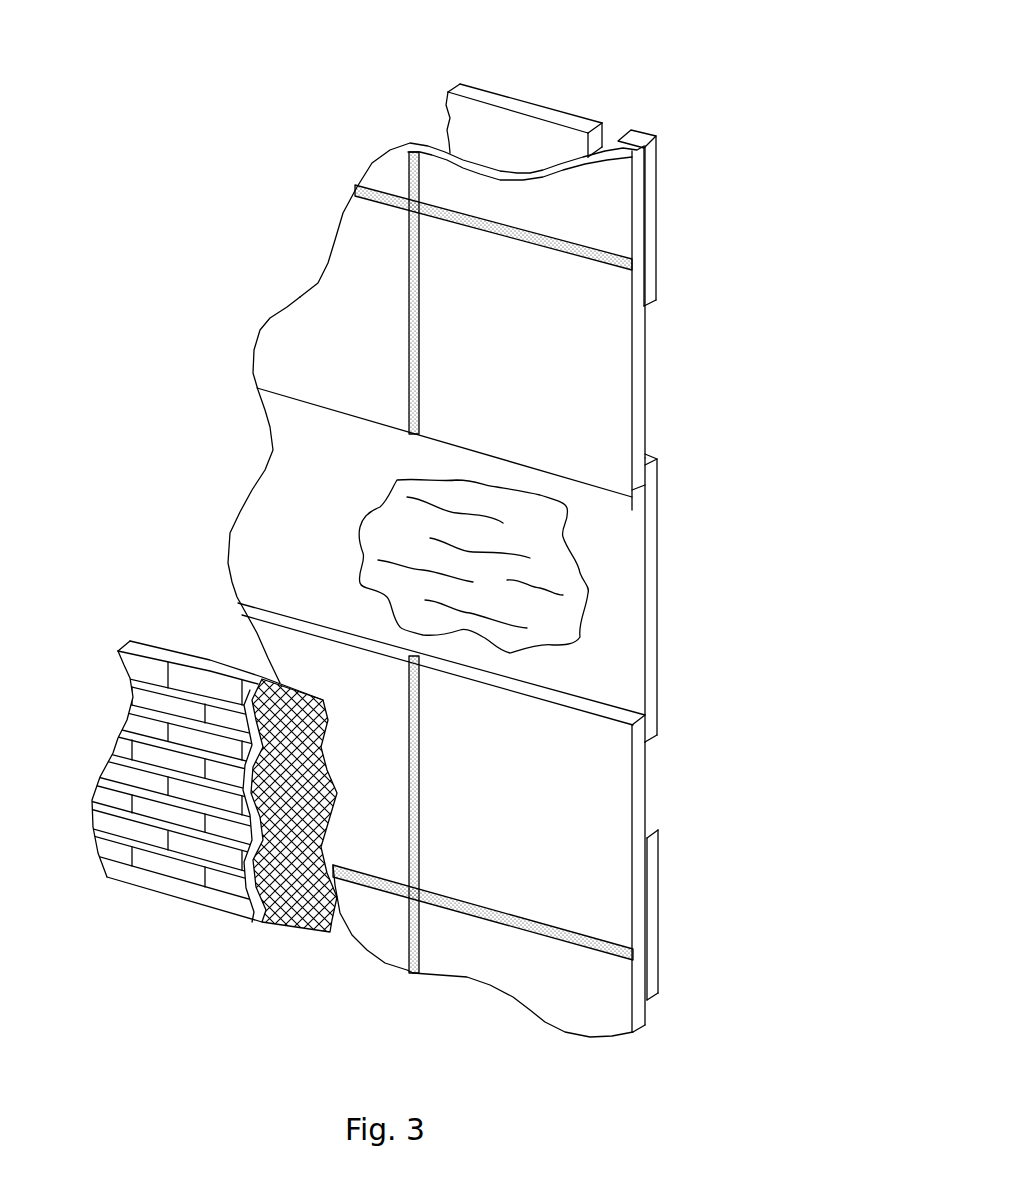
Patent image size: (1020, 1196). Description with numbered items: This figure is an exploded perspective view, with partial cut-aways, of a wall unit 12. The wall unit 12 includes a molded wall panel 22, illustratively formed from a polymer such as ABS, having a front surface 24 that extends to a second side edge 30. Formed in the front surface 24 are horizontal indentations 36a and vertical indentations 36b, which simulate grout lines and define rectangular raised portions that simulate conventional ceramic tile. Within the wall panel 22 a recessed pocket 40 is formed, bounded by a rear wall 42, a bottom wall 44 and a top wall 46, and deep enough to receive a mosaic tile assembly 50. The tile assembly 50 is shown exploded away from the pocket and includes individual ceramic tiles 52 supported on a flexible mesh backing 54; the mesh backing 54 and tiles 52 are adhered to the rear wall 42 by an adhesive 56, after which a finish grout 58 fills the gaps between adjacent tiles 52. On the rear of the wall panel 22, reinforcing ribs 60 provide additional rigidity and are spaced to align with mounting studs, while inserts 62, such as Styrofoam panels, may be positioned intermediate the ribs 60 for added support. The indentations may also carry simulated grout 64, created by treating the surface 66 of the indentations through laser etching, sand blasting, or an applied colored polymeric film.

The wall unit 12 is at (295, 150).
The molded wall panel 22 is at (638, 368).
The front surface 24 is at (350, 310).
The second side edge 30 is at (642, 812).
The horizontal indentations 36a is at (390, 888).
The vertical indentations 36b is at (420, 823).
The recessed pocket 40 is at (622, 657).
The rear wall 42 is at (650, 575).
The bottom wall 44 is at (618, 713).
The top wall 46 is at (635, 497).
The mosaic tile assembly 50 is at (200, 740).
The ceramic tiles 52 is at (123, 790).
The mesh backing 54 is at (297, 917).
The adhesive 56 is at (378, 540).
The finish grout 58 is at (165, 882).
The reinforcing ribs 60 is at (637, 138).
The inserts 62 is at (520, 103).
The simulated grout 64 is at (420, 927).
The surface 66 is at (413, 975).